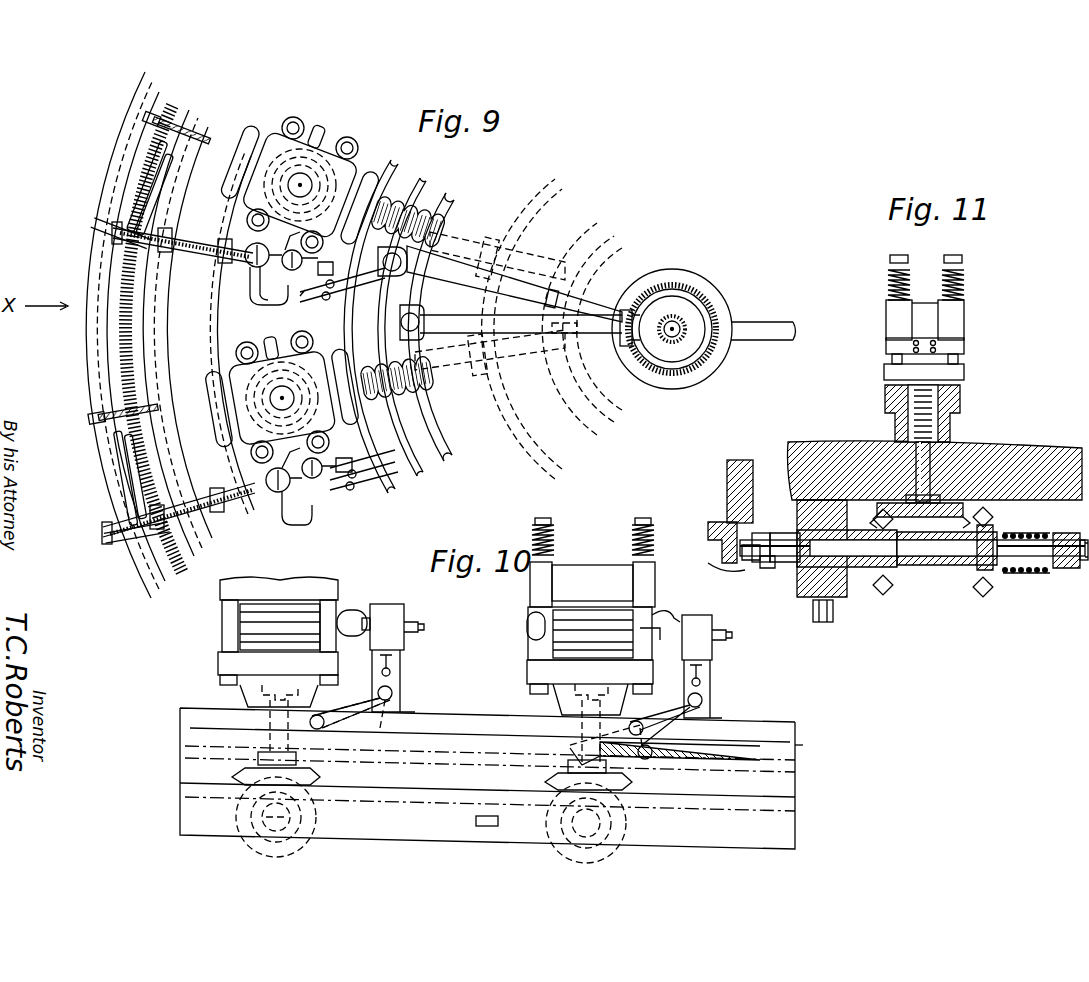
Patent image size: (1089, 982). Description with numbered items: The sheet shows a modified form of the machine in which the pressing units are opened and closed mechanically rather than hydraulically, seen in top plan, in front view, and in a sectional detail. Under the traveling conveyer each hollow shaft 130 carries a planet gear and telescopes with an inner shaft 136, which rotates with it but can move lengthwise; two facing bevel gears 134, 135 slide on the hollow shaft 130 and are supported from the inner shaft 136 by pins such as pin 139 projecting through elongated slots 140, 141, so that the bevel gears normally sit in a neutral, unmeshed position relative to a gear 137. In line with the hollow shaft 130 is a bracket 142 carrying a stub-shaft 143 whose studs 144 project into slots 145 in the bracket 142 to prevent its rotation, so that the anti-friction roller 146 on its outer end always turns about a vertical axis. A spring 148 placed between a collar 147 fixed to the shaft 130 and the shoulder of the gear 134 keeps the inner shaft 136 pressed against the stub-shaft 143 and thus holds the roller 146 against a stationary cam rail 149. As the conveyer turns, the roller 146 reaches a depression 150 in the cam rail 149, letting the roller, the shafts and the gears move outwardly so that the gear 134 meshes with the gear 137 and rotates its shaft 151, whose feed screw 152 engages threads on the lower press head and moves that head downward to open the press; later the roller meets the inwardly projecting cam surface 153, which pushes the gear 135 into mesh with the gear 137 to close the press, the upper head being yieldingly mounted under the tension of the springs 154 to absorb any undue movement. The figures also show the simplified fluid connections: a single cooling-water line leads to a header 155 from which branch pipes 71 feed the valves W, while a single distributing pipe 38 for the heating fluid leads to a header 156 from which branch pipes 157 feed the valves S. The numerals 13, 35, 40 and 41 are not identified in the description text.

In FIG. 10, the rail 13 is at (795, 722).
In FIG. 11, the rail 13 is at (1015, 445).
In FIG. 9, the inclined bar 35 is at (530, 258).
In FIG. 9, the distributing pipe 38 is at (772, 338).
In FIG. 9, the pipe 40 is at (456, 200).
In FIG. 9, the lever rod 41 is at (515, 350).
In FIG. 9, the branch pipes 71 is at (252, 266).
In FIG. 9, the shaft 130 is at (475, 232).
In FIG. 11, the bevel gear 134 is at (1000, 570).
In FIG. 11, the bevel gear 135 is at (880, 575).
In FIG. 11, the shaft 136 is at (940, 575).
In FIG. 11, the gear 137 is at (970, 508).
In FIG. 11, the pin 139 is at (886, 572).
In FIG. 11, the elongated slot 140 is at (985, 580).
In FIG. 11, the elongated slot 141 is at (870, 575).
In FIG. 11, the bracket 142 is at (805, 595).
In FIG. 11, the stub-shaft 143 is at (770, 535).
In FIG. 11, the studs 144 is at (778, 570).
In FIG. 11, the slots 145 is at (755, 565).
In FIG. 11, the anti-friction roller 146 is at (712, 545).
In FIG. 11, the collar 147 is at (1072, 572).
In FIG. 11, the spring 148 is at (1045, 580).
In FIG. 10, the cam rail 149 is at (180, 794).
In FIG. 11, the cam rail 149 is at (718, 520).
In FIG. 9, the depression 150 is at (86, 340).
In FIG. 11, the shaft 151 is at (935, 448).
In FIG. 11, the feed screw 152 is at (958, 392).
In FIG. 9, the cam surface 153 is at (100, 418).
In FIG. 11, the cam surface 153 is at (718, 566).
In FIG. 10, the springs 154 is at (596, 542).
In FIG. 11, the springs 154 is at (890, 294).
In FIG. 9, the header 155 is at (428, 178).
In FIG. 9, the header 156 is at (400, 162).
In FIG. 9, the branch pipes 157 is at (312, 292).
In FIG. 10, the valves S is at (321, 664).
In FIG. 10, the valves W is at (629, 680).